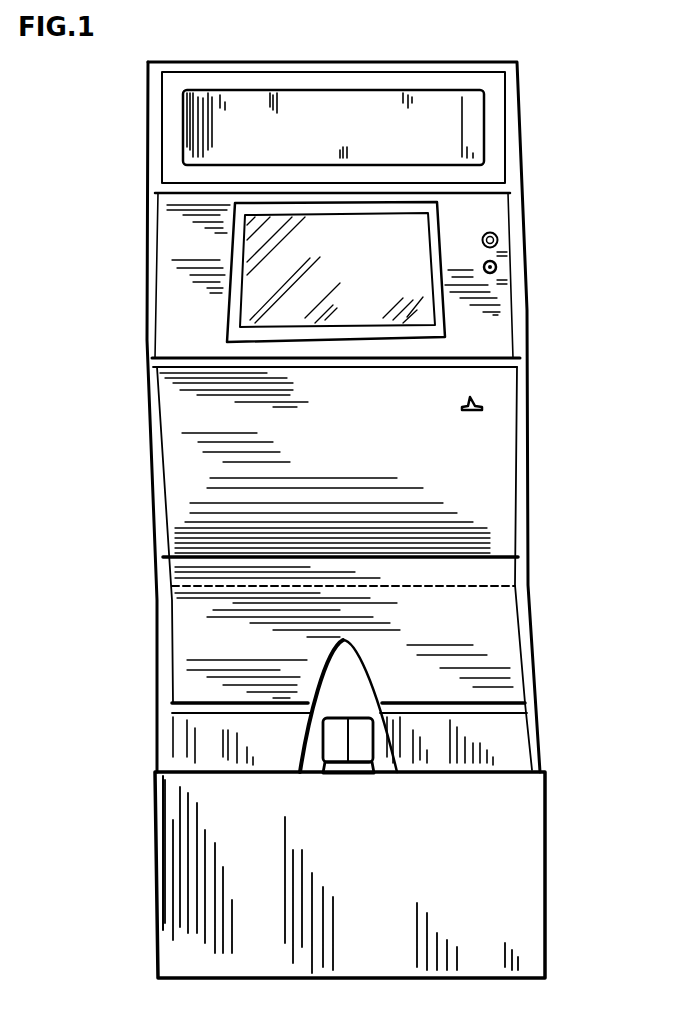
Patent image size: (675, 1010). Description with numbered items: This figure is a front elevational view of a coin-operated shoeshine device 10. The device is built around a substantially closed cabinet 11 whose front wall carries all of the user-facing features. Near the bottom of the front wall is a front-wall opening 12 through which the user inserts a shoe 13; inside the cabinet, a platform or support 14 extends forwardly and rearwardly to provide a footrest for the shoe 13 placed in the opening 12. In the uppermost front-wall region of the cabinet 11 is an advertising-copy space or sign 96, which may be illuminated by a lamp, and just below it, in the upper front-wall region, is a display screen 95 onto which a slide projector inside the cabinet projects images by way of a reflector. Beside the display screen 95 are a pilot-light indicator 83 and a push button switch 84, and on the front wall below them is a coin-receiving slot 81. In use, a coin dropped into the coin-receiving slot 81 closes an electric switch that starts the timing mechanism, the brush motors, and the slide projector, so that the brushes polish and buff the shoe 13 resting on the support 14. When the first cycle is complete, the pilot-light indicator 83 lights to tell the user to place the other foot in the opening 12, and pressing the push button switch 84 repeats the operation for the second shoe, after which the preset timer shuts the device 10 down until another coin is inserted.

The shoeshine device 10 is at (538, 356).
The cabinet 11 is at (530, 483).
The front-wall opening 12 is at (370, 668).
The shoe 13 is at (375, 743).
The platform or support 14 is at (310, 770).
The coin-receiving slot 81 is at (474, 402).
The pilot-light indicator 83 is at (497, 243).
The push button switch 84 is at (497, 270).
The display screen 95 is at (417, 238).
The advertising-copy space or sign 96 is at (484, 97).